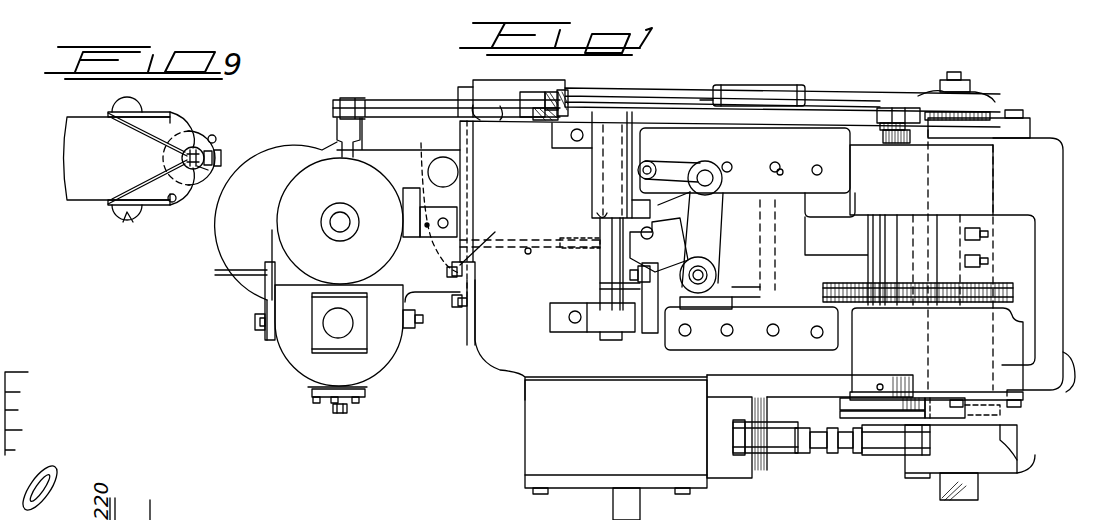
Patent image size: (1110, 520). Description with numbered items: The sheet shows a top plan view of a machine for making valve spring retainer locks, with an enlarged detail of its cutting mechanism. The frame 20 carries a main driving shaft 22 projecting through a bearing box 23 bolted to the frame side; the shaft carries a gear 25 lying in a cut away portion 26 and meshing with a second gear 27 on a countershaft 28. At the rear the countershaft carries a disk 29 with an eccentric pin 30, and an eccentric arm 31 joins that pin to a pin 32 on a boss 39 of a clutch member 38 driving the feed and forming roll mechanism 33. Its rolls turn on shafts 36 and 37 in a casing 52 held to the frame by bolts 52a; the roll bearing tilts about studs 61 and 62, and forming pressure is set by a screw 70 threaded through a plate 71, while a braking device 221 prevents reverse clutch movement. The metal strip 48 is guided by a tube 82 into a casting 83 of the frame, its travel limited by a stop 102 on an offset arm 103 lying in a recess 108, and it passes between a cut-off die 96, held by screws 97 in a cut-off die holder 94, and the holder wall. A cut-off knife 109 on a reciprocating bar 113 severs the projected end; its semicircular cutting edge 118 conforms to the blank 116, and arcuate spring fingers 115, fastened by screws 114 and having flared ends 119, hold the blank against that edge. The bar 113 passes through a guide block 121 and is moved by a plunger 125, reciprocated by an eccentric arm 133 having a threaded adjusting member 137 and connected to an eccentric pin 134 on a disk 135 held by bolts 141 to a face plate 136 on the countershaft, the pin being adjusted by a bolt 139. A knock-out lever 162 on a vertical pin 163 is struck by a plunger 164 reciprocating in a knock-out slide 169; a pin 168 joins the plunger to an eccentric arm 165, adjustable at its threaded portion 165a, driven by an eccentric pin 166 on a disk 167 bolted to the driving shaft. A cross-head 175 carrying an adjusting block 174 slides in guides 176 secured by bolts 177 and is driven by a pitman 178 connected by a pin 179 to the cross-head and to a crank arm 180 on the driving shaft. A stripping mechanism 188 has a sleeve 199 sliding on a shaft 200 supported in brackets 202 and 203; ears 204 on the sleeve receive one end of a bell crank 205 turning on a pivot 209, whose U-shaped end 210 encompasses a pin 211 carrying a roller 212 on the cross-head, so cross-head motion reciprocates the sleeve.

In FIG. 9, the cut-off knife 109 is at (72, 182).
In FIG. 9, the spring fingers 115 is at (172, 115).
In FIG. 1, the spring fingers 115 is at (627, 285).
In FIG. 9, the cutting edge 118 is at (182, 158).
In FIG. 9, the blank 116 is at (186, 167).
In FIG. 9, the screws 97 is at (223, 160).
In FIG. 9, the cut-off die holder 94 is at (215, 141).
In FIG. 9, the cut-off die 96 is at (208, 170).
In FIG. 9, the flared ends 119 is at (190, 180).
In FIG. 9, the screws 114 is at (127, 214).
In FIG. 1, the pin 32 is at (352, 98).
In FIG. 1, the knock-out slide 169 is at (496, 85).
In FIG. 1, the plunger 164 is at (470, 93).
In FIG. 1, the pin 168 is at (560, 100).
In FIG. 1, the eccentric arm 31 is at (660, 106).
In FIG. 1, the eccentric arm 165 is at (702, 97).
In FIG. 1, the threaded intermediate portion 165a is at (740, 97).
In FIG. 1, the eccentric pin 30 is at (888, 107).
In FIG. 1, the eccentric pin 166 is at (958, 74).
In FIG. 1, the disk 167 is at (968, 113).
In FIG. 1, the casting 83 is at (502, 368).
In FIG. 1, the knock-out lever 162 is at (440, 140).
In FIG. 1, the boss 39 is at (337, 130).
In FIG. 1, the clutch member 38 is at (283, 240).
In FIG. 1, the feed and forming roll mechanism 33 is at (264, 240).
In FIG. 1, the shaft 36 is at (340, 237).
In FIG. 1, the shaft 37 is at (352, 332).
In FIG. 1, the metal strip 48 is at (247, 283).
In FIG. 1, the stud 61 is at (257, 328).
In FIG. 1, the stud 62 is at (424, 330).
In FIG. 1, the plate 71 is at (367, 393).
In FIG. 1, the screw 70 is at (338, 416).
In FIG. 1, the vertical pin 163 is at (450, 186).
In FIG. 1, the braking device 221 is at (416, 182).
In FIG. 1, the bolts 52a is at (480, 236).
In FIG. 1, the casing 52 is at (466, 286).
In FIG. 1, the cylindrical tube 82 is at (528, 255).
In FIG. 1, the bracket 203 is at (560, 140).
In FIG. 1, the sleeve 199 is at (600, 163).
In FIG. 1, the stripping mechanism 188 is at (592, 195).
In FIG. 1, the shaft 200 is at (600, 215).
In FIG. 1, the stop 102 is at (628, 273).
In FIG. 1, the offset arm 103 is at (651, 318).
In FIG. 1, the bracket 202 is at (600, 322).
In FIG. 1, the guides 176 is at (758, 165).
In FIG. 1, the ears 204 is at (658, 162).
In FIG. 1, the pivot 209 is at (715, 180).
In FIG. 1, the cross-head 175 is at (800, 176).
In FIG. 1, the disk 29 is at (873, 141).
In FIG. 1, the bell crank 205 is at (715, 224).
In FIG. 1, the recess 108 is at (686, 216).
In FIG. 1, the adjusting block 174 is at (660, 245).
In FIG. 1, the U-shaped end 210 is at (714, 270).
In FIG. 1, the roller 212 is at (706, 296).
In FIG. 1, the pin 211 is at (718, 278).
In FIG. 1, the pin 179 is at (830, 205).
In FIG. 1, the pitman 178 is at (860, 252).
In FIG. 1, the countershaft 28 is at (880, 260).
In FIG. 1, the bolts 177 is at (682, 340).
In FIG. 1, the second gear 27 is at (830, 303).
In FIG. 1, the gear 25 is at (1003, 310).
In FIG. 1, the cut away portion 26 is at (1035, 238).
In FIG. 1, the crank arm 180 is at (1012, 256).
In FIG. 1, the frame 20 is at (1072, 386).
In FIG. 1, the guide block 121 is at (616, 437).
In FIG. 1, the bar 113 is at (630, 500).
In FIG. 1, the plunger 125 is at (733, 472).
In FIG. 1, the face plate 136 is at (853, 392).
In FIG. 1, the bolt 139 is at (840, 406).
In FIG. 1, the disk 135 is at (838, 415).
In FIG. 1, the eccentric arm 133 is at (780, 450).
In FIG. 1, the threaded adjusting member 137 is at (836, 450).
In FIG. 1, the eccentric pin 134 is at (910, 453).
In FIG. 1, the bearing box 23 is at (1002, 460).
In FIG. 1, the main driving shaft 22 is at (980, 488).
In FIG. 1, the bolts 141 is at (981, 510).